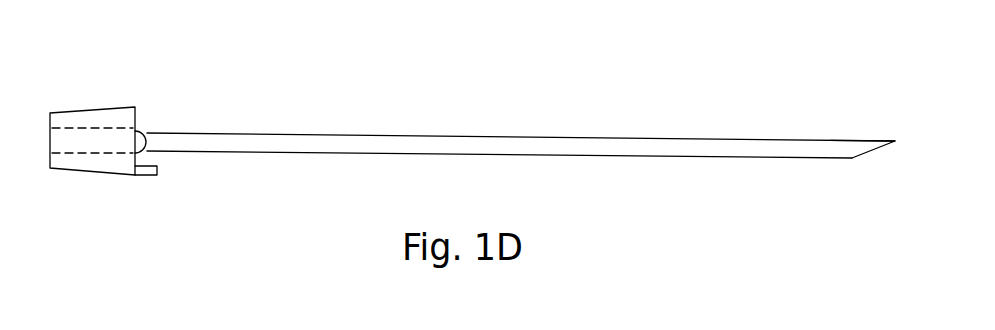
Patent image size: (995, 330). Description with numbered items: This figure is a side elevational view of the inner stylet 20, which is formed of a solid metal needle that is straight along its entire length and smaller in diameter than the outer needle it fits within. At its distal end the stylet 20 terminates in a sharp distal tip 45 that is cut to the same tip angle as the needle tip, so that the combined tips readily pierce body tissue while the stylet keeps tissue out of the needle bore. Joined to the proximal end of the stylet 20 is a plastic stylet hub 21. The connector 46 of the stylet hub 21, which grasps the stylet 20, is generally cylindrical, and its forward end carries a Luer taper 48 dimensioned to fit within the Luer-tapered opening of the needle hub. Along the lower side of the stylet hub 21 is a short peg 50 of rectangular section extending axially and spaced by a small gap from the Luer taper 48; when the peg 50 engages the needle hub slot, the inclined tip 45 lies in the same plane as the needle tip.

The inner stylet 20 is at (293, 97).
The stylet hub 21 is at (89, 110).
The distal tip 45 is at (880, 139).
The connector 46 is at (140, 130).
The Luer taper 48 is at (118, 127).
The peg 50 is at (148, 176).